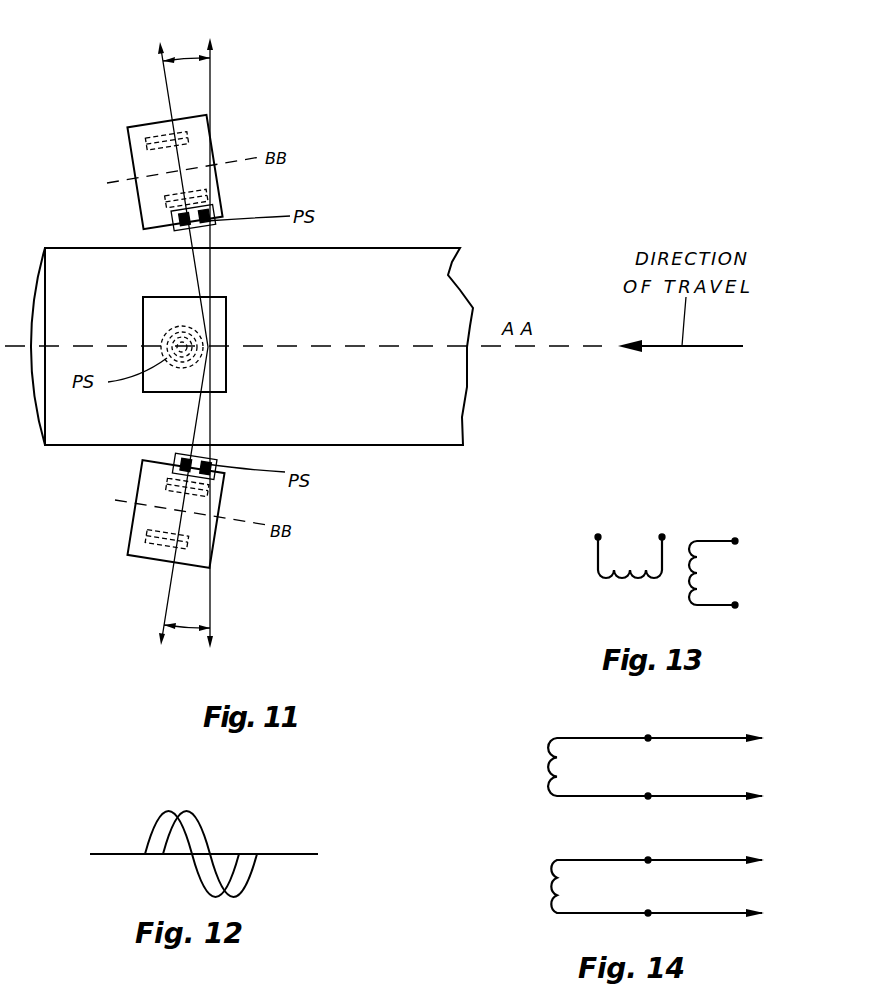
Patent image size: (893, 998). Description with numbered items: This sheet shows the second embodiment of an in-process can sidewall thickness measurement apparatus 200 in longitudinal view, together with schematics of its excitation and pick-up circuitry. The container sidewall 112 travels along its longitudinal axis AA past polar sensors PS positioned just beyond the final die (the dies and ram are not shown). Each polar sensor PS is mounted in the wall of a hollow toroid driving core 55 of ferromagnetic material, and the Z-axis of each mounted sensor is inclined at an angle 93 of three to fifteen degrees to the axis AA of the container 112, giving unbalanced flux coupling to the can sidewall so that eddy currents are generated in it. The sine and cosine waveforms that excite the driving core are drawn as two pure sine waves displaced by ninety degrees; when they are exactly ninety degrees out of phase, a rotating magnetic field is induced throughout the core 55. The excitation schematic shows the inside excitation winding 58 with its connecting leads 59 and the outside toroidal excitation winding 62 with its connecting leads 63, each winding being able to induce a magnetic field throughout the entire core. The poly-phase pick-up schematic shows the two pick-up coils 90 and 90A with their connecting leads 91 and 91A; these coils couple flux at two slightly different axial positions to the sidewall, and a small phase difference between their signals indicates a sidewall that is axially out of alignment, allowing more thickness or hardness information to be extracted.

In FIG. 11, the hollow toroid core 55 is at (145, 124).
In FIG. 11, the inside excitation winding 58 is at (155, 140).
In FIG. 13, the inside excitation winding 58 is at (622, 578).
In FIG. 13, the connecting leads 59 is at (598, 537).
In FIG. 13, the outside toroidal excitation winding 62 is at (690, 583).
In FIG. 13, the connecting leads 63 is at (735, 541).
In FIG. 14, the pick-up coil 90 is at (550, 763).
In FIG. 14, the pick-up coil 90A is at (550, 883).
In FIG. 14, the connecting leads 91 is at (716, 767).
In FIG. 14, the connecting leads 91A is at (723, 886).
In FIG. 11, the angle 93 is at (188, 60).
In FIG. 11, the container sidewall 112 is at (405, 433).
In FIG. 11, the sidewall thickness measurement apparatus 200 is at (321, 157).